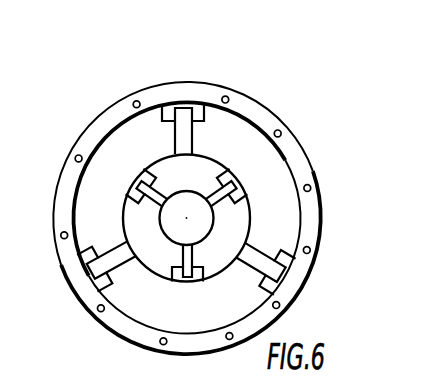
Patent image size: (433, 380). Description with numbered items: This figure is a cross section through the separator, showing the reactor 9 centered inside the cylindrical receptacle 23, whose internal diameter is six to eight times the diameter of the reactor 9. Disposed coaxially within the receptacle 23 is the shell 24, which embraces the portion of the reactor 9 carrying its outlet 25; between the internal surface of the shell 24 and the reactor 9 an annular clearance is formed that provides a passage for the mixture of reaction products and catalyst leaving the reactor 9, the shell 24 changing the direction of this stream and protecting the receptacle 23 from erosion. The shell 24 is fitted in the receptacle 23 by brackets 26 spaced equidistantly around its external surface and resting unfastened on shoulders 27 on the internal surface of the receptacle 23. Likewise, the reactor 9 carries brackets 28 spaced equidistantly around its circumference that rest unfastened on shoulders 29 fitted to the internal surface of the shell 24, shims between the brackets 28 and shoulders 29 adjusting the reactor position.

The reactor 9 is at (197, 192).
The receptacle 23 is at (255, 119).
The shell 24 is at (251, 221).
The outlet 25 is at (174, 236).
The brackets 26 is at (180, 129).
The shoulders 27 is at (196, 112).
The brackets 28 is at (150, 212).
The shoulders 29 is at (127, 192).